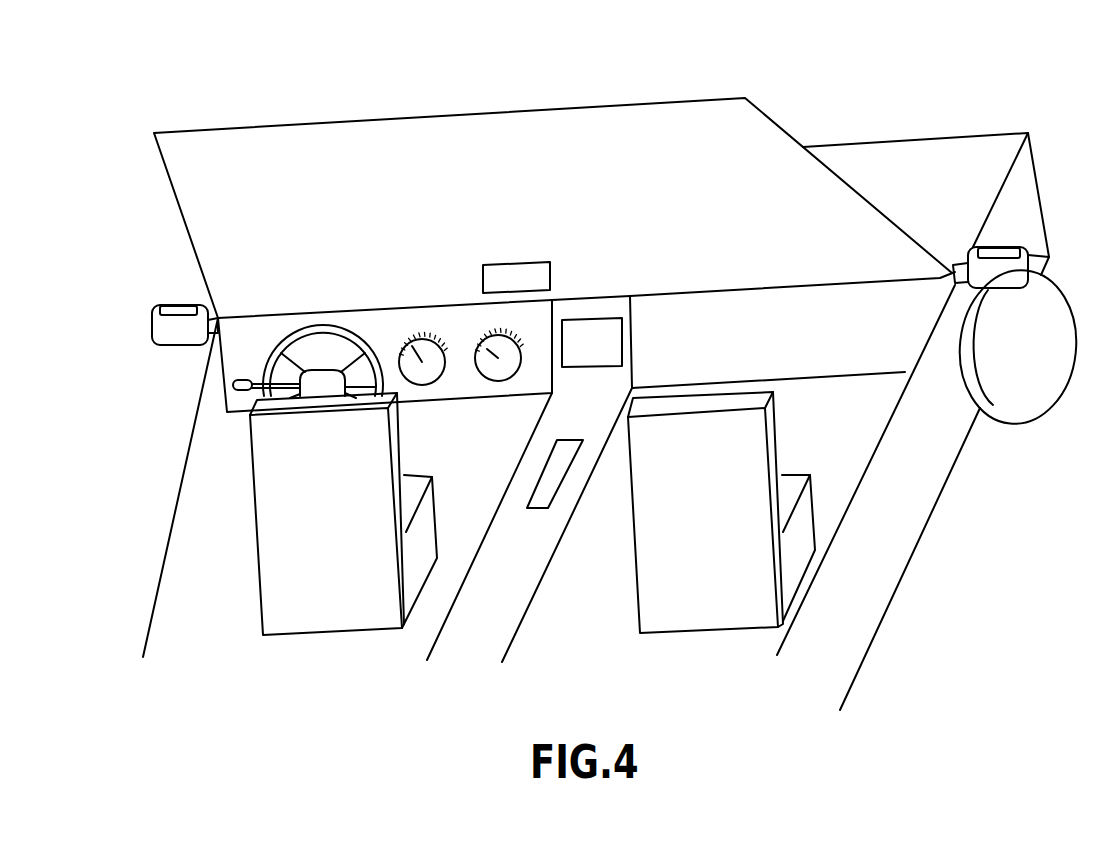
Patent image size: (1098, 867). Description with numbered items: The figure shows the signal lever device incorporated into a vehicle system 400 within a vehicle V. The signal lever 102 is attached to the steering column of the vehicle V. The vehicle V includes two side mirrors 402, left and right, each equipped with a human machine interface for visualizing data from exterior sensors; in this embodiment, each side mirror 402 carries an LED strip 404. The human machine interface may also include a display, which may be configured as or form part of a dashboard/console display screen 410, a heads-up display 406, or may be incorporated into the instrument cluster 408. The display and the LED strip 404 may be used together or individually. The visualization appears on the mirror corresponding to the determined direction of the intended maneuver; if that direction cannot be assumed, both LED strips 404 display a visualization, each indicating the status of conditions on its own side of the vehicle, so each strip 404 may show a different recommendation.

The vehicle system 400 is at (894, 55).
The vehicle V is at (987, 136).
The side mirror 402 is at (176, 345).
The LED strip 404 is at (173, 306).
The heads-up display 406 is at (505, 265).
The instrument cluster 408 is at (468, 379).
The dashboard/console display screen 410 is at (622, 340).
The signal lever 102 is at (240, 380).